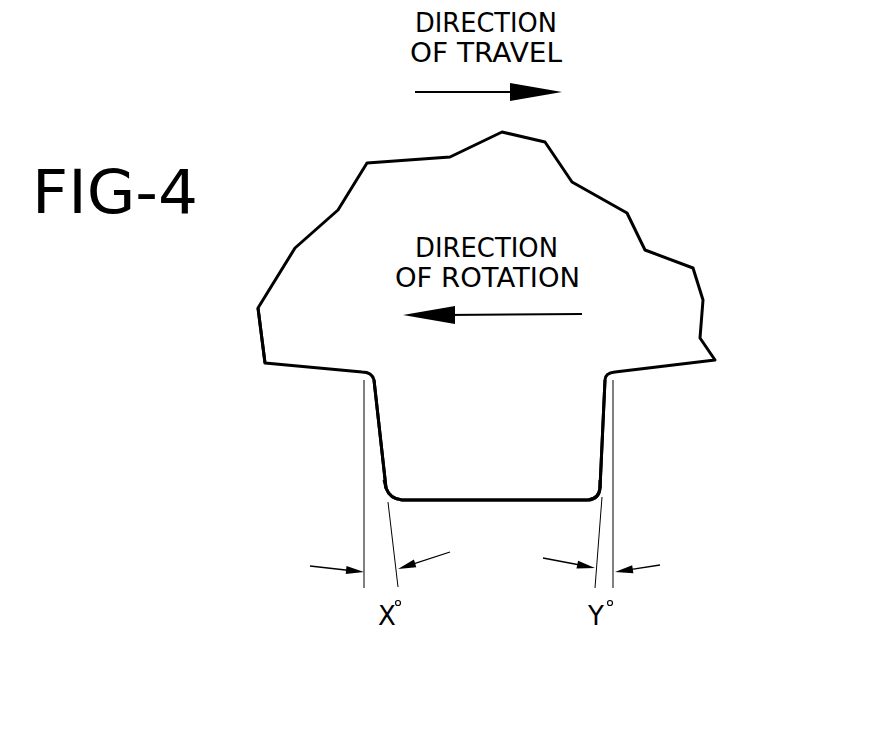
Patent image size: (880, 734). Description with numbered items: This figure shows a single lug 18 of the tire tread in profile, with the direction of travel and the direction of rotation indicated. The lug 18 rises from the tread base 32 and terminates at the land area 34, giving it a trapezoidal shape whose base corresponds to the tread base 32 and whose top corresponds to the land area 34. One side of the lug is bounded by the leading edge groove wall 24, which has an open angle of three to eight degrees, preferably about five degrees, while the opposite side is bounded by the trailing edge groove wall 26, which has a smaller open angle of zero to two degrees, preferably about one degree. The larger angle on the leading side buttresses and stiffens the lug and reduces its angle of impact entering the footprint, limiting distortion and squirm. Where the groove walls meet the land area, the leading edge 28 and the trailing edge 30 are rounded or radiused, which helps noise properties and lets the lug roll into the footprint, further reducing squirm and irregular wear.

The lug 18 is at (268, 559).
The leading edge groove wall 24 is at (373, 412).
The trailing edge groove wall 26 is at (603, 412).
The leading edge 28 is at (385, 483).
The trailing edge 30 is at (600, 488).
The tread base 32 is at (678, 308).
The land area 34 is at (470, 502).